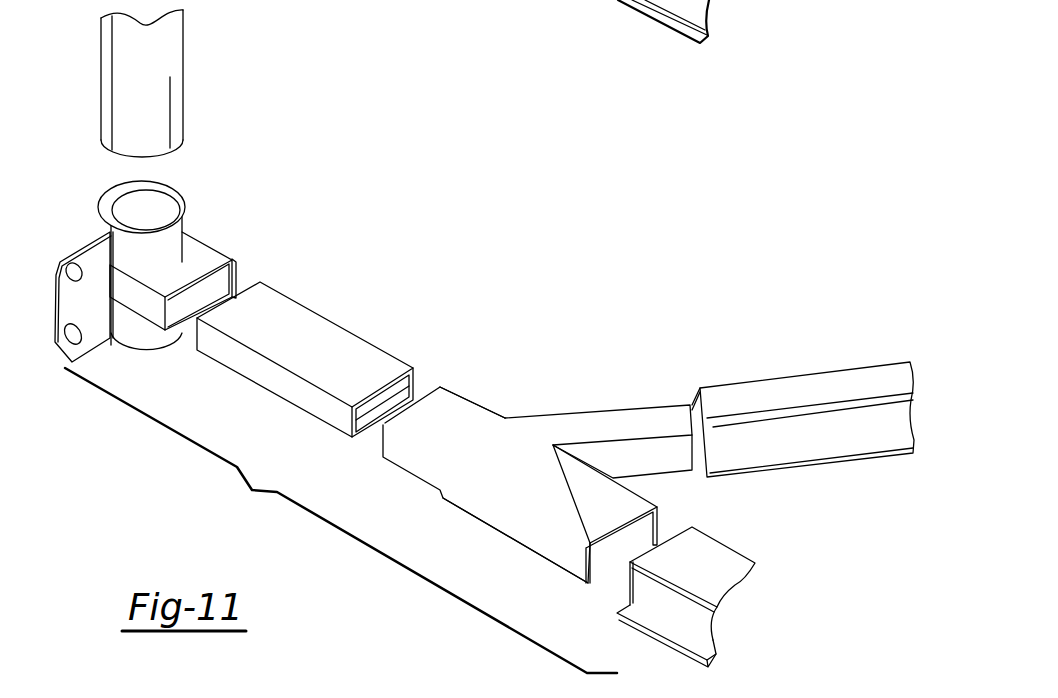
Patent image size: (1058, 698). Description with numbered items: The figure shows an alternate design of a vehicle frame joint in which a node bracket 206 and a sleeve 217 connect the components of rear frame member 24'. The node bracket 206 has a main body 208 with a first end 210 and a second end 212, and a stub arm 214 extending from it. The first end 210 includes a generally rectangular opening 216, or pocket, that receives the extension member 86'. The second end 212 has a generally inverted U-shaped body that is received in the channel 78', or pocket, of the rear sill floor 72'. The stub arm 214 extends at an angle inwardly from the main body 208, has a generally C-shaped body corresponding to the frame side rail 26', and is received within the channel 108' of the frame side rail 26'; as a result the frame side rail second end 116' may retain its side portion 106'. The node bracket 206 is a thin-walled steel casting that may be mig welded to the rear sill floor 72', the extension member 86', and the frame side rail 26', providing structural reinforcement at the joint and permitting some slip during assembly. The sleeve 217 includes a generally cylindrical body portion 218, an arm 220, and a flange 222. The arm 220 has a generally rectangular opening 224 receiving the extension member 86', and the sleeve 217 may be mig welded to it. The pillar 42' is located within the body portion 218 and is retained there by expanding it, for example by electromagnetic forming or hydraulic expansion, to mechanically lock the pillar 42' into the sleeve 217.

The rear frame member 24' is at (373, 336).
The frame side rail 26' is at (778, 413).
The pillar 42' is at (166, 83).
The rear sill floor 72' is at (701, 333).
The channel 78' is at (701, 333).
The extension member 86' is at (305, 359).
The side portion 106' is at (811, 479).
The channel 108' is at (671, 379).
The frame side rail second end 116' is at (810, 374).
The node bracket 206 is at (486, 528).
The main body 208 is at (513, 550).
The first end 210 is at (448, 387).
The second end 212 is at (597, 562).
The stub arm 214 is at (607, 425).
The rectangular opening 216 is at (437, 386).
The sleeve 217 is at (100, 189).
The body portion 218 is at (158, 334).
The arm 220 is at (196, 253).
The flange 222 is at (87, 333).
The rectangular opening 224 is at (234, 266).